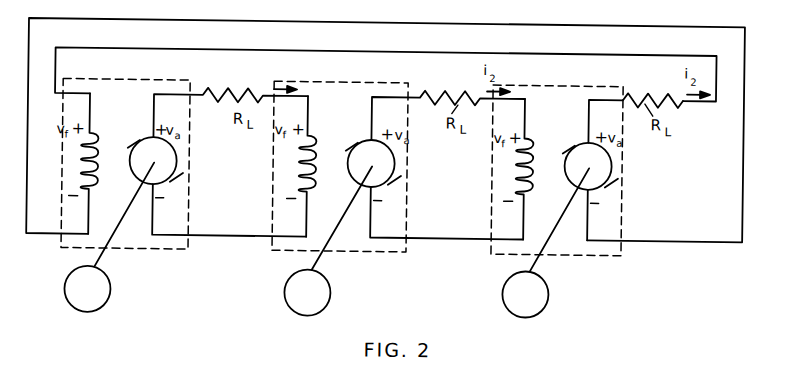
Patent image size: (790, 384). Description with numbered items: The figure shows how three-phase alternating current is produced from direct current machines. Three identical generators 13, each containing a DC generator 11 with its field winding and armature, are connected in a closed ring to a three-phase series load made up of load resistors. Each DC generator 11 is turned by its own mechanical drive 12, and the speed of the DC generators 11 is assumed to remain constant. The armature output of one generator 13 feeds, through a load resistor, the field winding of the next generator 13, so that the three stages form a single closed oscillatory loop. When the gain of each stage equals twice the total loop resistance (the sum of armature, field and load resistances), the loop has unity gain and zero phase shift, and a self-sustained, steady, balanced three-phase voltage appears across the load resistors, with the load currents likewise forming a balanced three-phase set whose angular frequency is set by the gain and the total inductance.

The DC generator 11 is at (278, 76).
The mechanical drive 12 is at (114, 305).
The generator 13 is at (152, 246).